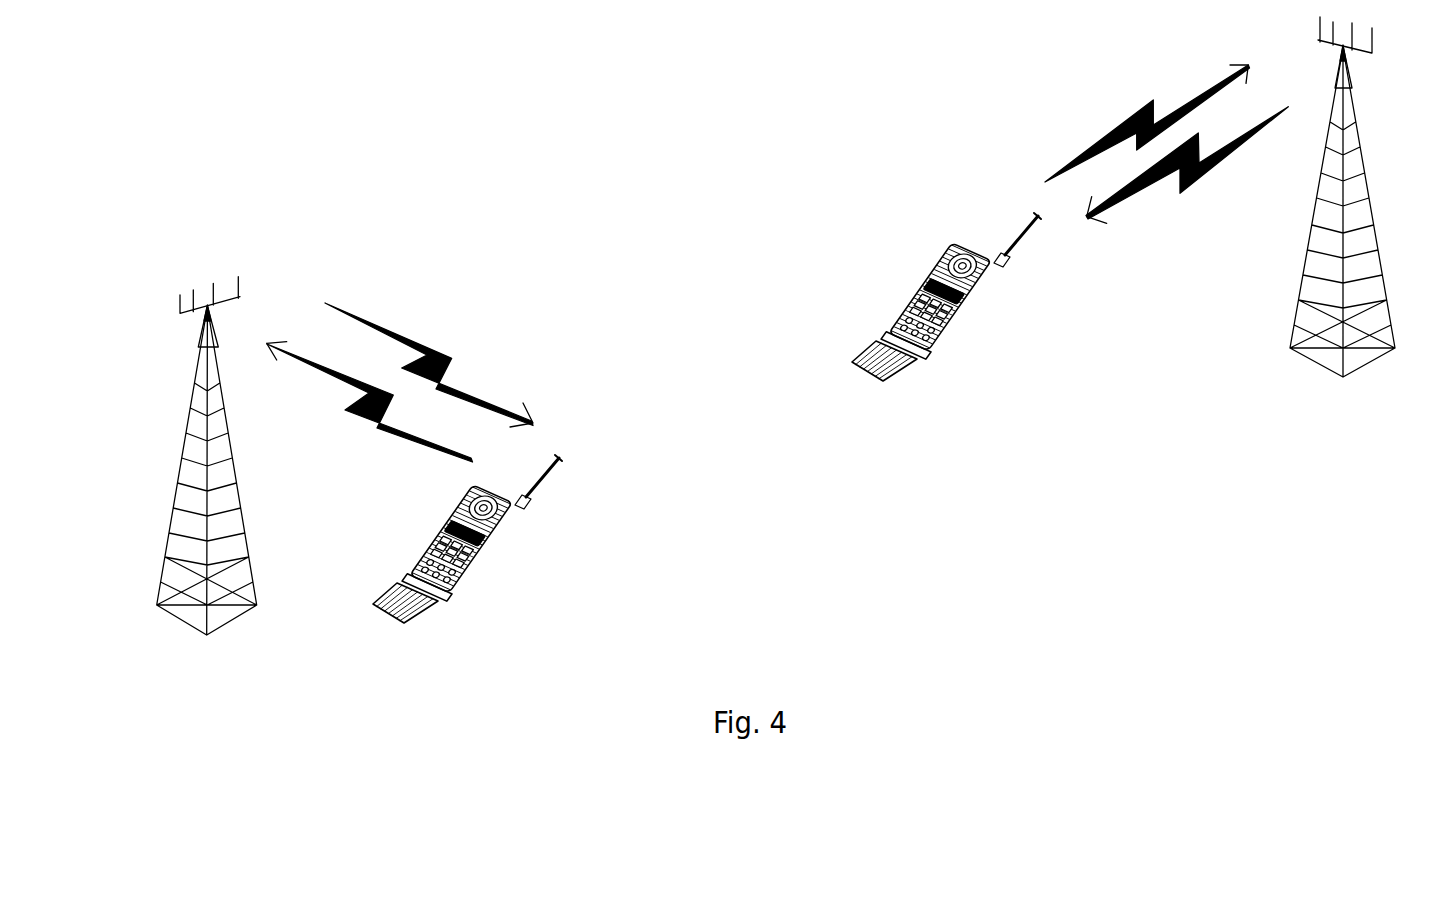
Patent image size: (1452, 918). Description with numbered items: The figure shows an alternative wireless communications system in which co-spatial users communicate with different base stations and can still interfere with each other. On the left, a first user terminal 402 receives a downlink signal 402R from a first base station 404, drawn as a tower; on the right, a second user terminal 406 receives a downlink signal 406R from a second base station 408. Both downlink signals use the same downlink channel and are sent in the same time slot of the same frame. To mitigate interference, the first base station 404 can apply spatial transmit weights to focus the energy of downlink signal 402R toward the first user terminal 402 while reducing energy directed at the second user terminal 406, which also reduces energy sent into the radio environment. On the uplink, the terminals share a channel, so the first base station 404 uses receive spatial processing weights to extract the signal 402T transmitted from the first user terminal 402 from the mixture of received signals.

The first user terminal 402 is at (475, 577).
The first base station 404 is at (197, 332).
The second user terminal 406 is at (953, 337).
The second base station 408 is at (1353, 70).
The signal transmitted from user terminal 402 402T is at (354, 410).
The downlink signal 402R is at (385, 330).
The downlink signal 406R is at (1198, 178).